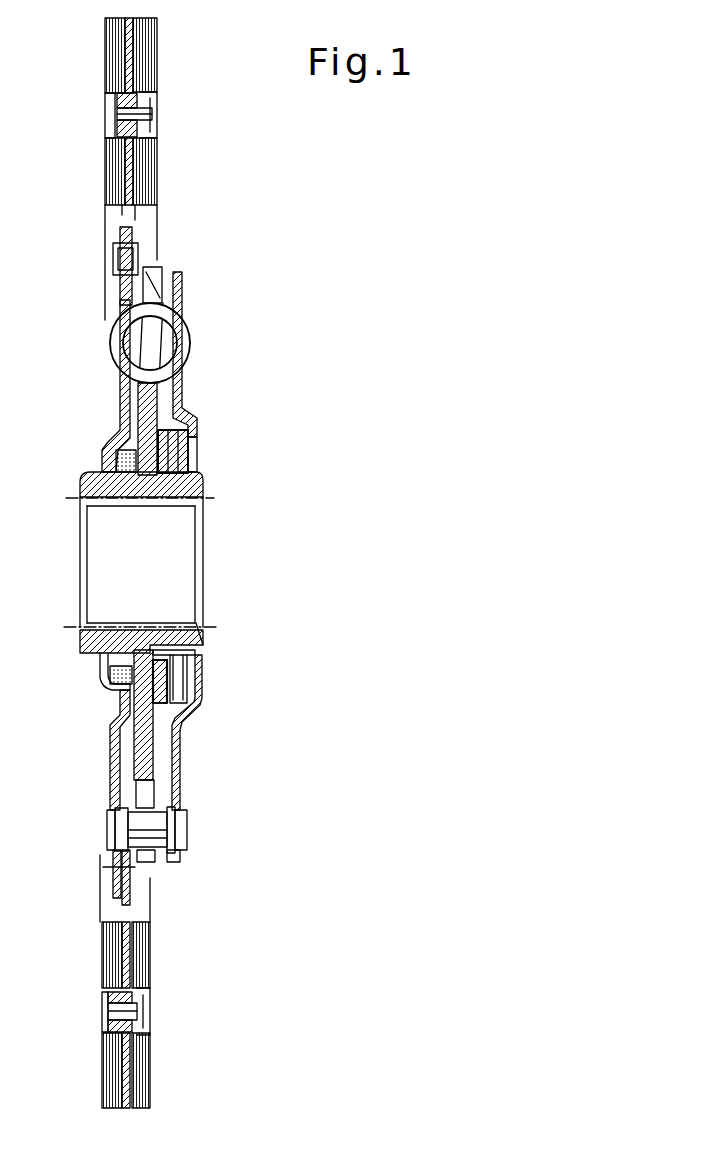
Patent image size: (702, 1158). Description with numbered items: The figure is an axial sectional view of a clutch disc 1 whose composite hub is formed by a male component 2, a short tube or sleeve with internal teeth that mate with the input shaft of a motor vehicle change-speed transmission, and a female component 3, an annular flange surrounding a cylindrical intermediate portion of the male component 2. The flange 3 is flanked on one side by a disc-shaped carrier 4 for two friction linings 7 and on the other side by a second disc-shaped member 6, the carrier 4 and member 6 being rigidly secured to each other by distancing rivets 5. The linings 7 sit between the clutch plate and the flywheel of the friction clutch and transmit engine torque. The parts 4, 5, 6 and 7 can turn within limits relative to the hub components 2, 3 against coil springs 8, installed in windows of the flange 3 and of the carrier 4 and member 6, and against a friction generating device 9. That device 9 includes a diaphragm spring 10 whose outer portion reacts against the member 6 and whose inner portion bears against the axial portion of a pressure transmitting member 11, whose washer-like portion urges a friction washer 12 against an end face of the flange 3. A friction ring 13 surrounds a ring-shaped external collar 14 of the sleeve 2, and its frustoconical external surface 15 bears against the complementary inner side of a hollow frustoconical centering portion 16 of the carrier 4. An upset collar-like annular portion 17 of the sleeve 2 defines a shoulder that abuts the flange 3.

The clutch disc 1 is at (276, 302).
The male component 2 is at (92, 482).
The female component 3 is at (148, 410).
The carrier 4 is at (120, 284).
The rivets 5 is at (158, 826).
The disc-shaped member 6 is at (180, 772).
The friction linings 7 is at (112, 50).
The coil springs 8 is at (121, 338).
The friction generating device 9 is at (204, 465).
The energy storing member 10 is at (190, 678).
The pressure transmitting member 11 is at (183, 447).
The friction washer 12 is at (193, 660).
The friction ring 13 is at (130, 682).
The external collar 14 is at (122, 662).
The frustoconical external surface 15 is at (121, 440).
The centering portion 16 is at (116, 449).
The upset annular portion 17 is at (146, 638).